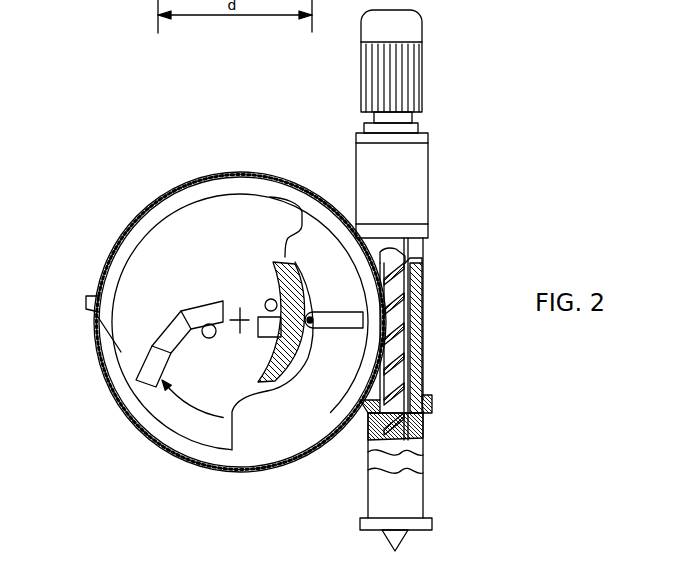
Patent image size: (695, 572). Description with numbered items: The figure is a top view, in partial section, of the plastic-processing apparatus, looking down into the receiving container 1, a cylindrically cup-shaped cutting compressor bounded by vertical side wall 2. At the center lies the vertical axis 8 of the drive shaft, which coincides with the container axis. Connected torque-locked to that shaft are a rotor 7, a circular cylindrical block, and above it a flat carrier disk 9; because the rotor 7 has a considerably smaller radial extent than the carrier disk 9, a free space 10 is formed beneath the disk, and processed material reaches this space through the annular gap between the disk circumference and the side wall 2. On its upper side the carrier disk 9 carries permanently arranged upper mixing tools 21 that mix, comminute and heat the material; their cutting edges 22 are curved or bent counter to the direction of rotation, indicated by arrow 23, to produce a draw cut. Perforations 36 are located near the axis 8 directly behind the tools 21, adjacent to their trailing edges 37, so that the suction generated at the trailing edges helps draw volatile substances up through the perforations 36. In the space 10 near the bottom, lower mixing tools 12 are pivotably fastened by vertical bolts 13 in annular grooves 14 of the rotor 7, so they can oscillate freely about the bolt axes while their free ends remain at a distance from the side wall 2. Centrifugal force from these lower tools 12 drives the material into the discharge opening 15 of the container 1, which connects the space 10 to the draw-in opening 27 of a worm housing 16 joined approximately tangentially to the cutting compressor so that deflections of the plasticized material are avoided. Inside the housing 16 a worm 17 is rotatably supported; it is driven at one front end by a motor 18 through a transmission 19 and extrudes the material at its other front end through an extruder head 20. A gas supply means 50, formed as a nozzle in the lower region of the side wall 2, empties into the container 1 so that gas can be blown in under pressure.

The receiving container 1 is at (122, 207).
The side wall 2 is at (275, 178).
The rotor 7 is at (294, 360).
The vertical axis 8 is at (236, 315).
The carrier disk 9 is at (203, 226).
The free space 10 is at (267, 430).
The lower mixing tools 12 is at (337, 321).
The vertical bolts 13 is at (312, 318).
The annular grooves 14 is at (293, 275).
The discharge opening 15 is at (424, 353).
The worm housing 16 is at (421, 297).
The worm 17 is at (394, 333).
The motor 18 is at (393, 88).
The transmission 19 is at (390, 195).
The extruder head 20 is at (414, 523).
The upper mixing tools 21 is at (177, 330).
The cutting edges 22 is at (135, 377).
The arrow 23 is at (183, 407).
The draw-in opening 27 is at (413, 262).
The perforations 36 is at (266, 298).
The trailing edges 37 is at (174, 337).
The gas supply means 50 is at (88, 295).